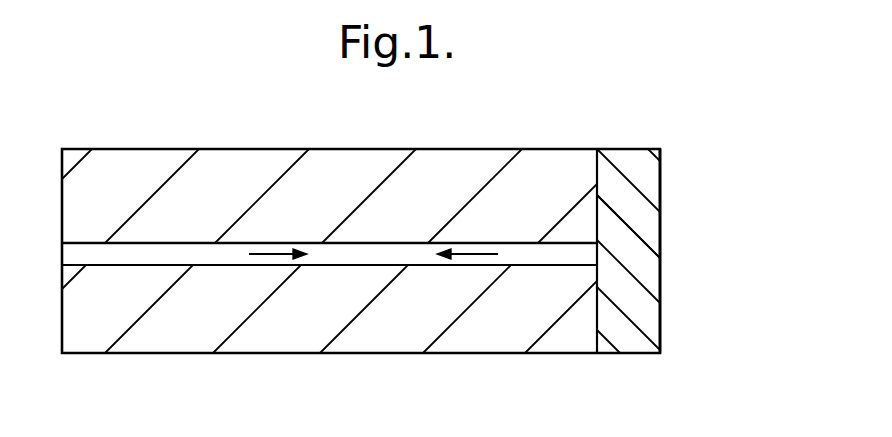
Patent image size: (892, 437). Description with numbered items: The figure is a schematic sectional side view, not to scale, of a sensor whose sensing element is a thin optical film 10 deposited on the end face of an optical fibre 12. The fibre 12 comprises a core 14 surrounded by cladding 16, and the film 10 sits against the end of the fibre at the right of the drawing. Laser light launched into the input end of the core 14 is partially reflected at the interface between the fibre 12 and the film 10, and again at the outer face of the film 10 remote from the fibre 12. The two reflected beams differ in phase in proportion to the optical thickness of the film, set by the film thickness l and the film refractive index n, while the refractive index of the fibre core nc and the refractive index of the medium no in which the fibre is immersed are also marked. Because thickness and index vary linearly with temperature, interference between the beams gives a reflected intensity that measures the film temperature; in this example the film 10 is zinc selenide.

The thin optical film 10 is at (660, 237).
The optical fibre 12 is at (448, 143).
The core 14 is at (197, 265).
The cladding 16 is at (315, 325).
The film refractive index n is at (633, 192).
The refractive index of the medium no is at (695, 251).
The refractive index of the fibre core nc is at (542, 255).
The film thickness l is at (660, 133).